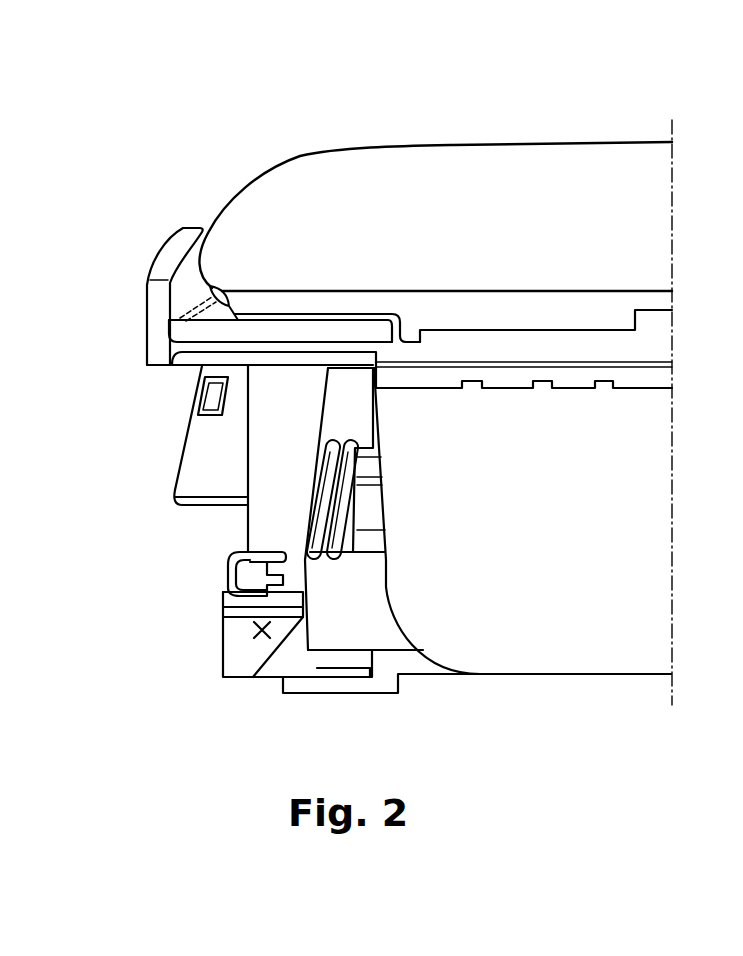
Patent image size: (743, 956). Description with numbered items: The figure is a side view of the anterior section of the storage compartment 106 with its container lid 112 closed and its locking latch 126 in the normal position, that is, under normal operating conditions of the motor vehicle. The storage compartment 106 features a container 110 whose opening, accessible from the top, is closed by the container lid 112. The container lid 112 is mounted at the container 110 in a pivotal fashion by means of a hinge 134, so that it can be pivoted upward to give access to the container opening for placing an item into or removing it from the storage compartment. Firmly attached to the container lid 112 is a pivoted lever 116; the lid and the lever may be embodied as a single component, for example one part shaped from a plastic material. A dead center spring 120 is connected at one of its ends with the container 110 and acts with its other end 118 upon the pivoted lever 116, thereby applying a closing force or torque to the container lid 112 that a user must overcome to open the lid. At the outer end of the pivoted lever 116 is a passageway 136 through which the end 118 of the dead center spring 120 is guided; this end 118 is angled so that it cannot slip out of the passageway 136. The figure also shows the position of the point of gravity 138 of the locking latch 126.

The storage compartment 106 is at (246, 156).
The container lid 112 is at (437, 168).
The hinge 134 is at (522, 340).
The container 110 is at (612, 521).
The pivoted lever 116 is at (268, 450).
The passageway 136 is at (230, 528).
The dead center spring 120 is at (348, 503).
The end of dead center spring 118 is at (238, 570).
The point of gravity 138 is at (248, 632).
The locking latch 126 is at (235, 657).